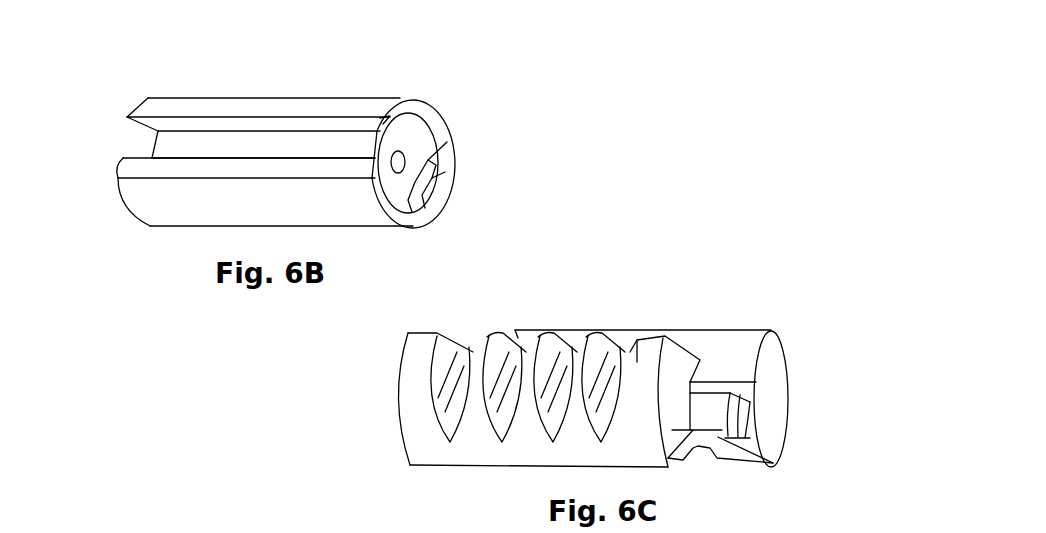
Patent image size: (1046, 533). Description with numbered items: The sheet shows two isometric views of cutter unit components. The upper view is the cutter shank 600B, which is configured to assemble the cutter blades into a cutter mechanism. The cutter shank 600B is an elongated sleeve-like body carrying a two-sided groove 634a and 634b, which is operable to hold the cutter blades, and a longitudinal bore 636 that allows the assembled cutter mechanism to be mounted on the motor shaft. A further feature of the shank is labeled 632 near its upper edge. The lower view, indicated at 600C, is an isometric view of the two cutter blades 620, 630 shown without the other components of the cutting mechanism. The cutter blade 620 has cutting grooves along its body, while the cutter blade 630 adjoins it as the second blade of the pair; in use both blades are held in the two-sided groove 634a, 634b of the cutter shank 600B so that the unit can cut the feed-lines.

In FIG. 6B, the cutter shank 600B is at (308, 124).
In FIG. 6B, the upper slot 632 is at (155, 112).
In FIG. 6B, the two-sided groove 634a is at (189, 138).
In FIG. 6B, the longitudinal bore 636 is at (405, 158).
In FIG. 6B, the two-sided groove 634b is at (434, 180).
In FIG. 6C, the threaded insert assembly 600C is at (602, 349).
In FIG. 6C, the cutter blade 620 is at (415, 400).
In FIG. 6C, the cutter blade 630 is at (767, 425).